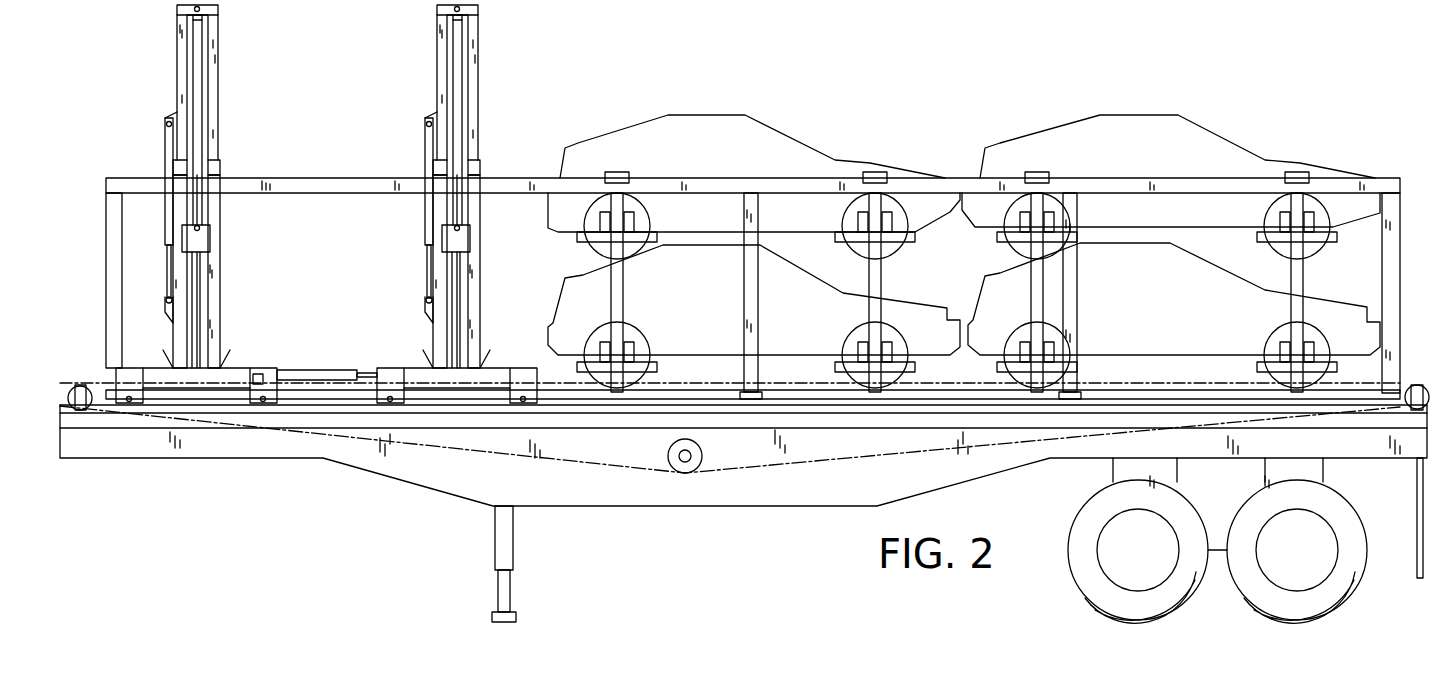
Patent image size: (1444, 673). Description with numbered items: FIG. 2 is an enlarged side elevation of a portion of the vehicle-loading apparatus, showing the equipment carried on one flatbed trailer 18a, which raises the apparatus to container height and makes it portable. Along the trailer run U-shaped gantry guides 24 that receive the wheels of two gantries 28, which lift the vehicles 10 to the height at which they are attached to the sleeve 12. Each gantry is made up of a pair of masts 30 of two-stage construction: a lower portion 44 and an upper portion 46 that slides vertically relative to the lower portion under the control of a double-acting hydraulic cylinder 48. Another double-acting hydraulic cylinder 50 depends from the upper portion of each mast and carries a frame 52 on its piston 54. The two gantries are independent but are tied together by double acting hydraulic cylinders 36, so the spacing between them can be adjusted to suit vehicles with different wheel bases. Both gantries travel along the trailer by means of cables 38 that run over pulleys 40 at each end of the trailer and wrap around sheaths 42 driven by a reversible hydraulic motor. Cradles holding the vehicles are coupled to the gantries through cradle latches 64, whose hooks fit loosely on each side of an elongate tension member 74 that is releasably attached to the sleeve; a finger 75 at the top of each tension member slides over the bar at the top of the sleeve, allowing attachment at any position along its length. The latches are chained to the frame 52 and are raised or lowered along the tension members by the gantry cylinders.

The vehicle 10 is at (785, 138).
The sleeve 12 is at (1390, 180).
The flatbed trailer 18a is at (802, 478).
The gantry guides 24 is at (552, 414).
The gantries 28 is at (326, 186).
The masts 30 is at (172, 45).
The double acting hydraulic cylinders 36 is at (318, 371).
The cables 38 is at (1222, 378).
The pulleys 40 is at (82, 388).
The sheaths 42 is at (690, 468).
The lower portion 44 is at (215, 330).
The upper portion 46 is at (218, 35).
The double-acting hydraulic cylinder 48 is at (166, 150).
The double-acting hydraulic cylinder 50 is at (200, 120).
The frame 52 is at (204, 235).
The piston 54 is at (200, 212).
The cradle latches 64 is at (655, 254).
The elongate tension member 74 is at (620, 277).
The finger 75 is at (617, 172).